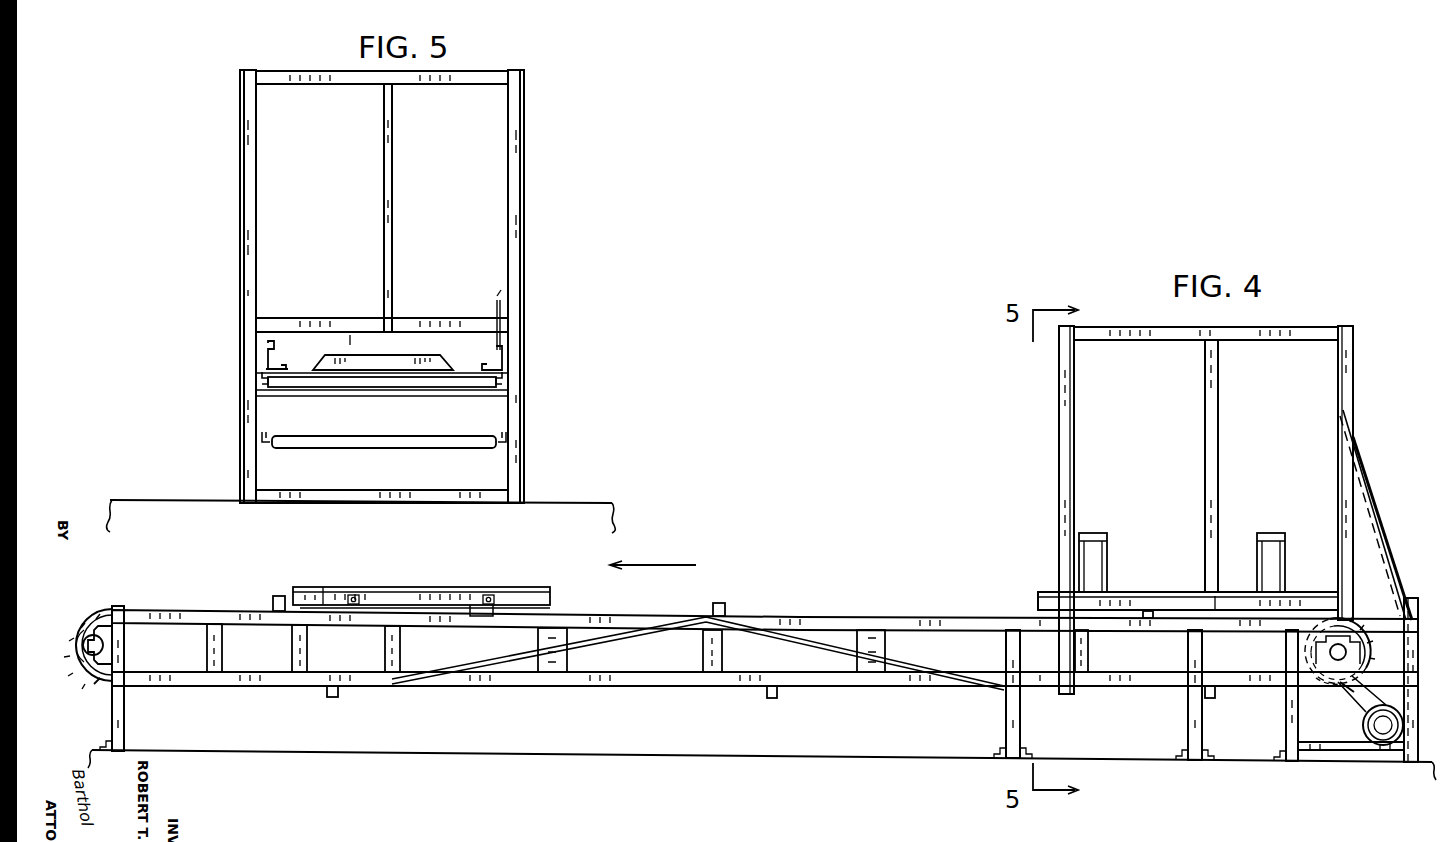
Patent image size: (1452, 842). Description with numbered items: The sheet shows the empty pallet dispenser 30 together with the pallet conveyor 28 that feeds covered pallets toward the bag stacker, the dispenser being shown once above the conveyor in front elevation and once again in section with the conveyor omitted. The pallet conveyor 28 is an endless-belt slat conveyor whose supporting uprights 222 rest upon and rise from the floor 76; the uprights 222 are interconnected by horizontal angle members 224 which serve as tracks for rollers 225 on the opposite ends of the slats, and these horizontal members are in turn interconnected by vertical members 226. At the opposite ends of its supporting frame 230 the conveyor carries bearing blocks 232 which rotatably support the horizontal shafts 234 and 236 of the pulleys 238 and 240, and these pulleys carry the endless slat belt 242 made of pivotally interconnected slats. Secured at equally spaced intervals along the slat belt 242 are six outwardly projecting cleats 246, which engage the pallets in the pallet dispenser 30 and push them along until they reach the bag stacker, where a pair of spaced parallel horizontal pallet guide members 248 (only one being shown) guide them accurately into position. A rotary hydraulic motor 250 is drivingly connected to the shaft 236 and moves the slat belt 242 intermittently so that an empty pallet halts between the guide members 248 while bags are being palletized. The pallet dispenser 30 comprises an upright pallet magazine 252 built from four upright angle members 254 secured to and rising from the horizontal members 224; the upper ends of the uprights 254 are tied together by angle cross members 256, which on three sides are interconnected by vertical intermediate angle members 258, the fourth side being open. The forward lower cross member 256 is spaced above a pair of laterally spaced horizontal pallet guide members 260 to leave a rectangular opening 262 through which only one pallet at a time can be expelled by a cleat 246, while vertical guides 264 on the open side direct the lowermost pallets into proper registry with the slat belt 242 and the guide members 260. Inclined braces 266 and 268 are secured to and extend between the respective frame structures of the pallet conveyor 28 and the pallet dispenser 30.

In FIG. 4, the pallet conveyor 28 is at (826, 616).
In FIG. 4, the pallet dispenser 30 is at (1366, 440).
In FIG. 5, the floor 76 is at (576, 502).
In FIG. 4, the floor 76 is at (487, 753).
In FIG. 4, the supporting uprights 222 is at (124, 700).
In FIG. 4, the horizontal angle members 224 is at (168, 622).
In FIG. 5, the rollers 225 is at (504, 378).
In FIG. 4, the vertical members 226 is at (222, 640).
In FIG. 4, the supporting frame 230 is at (586, 688).
In FIG. 4, the bearing blocks 232 is at (84, 622).
In FIG. 4, the shaft 234 is at (1352, 656).
In FIG. 4, the shaft 236 is at (84, 688).
In FIG. 4, the pulley 238 is at (1352, 626).
In FIG. 4, the pulley 240 is at (104, 612).
In FIG. 5, the endless slat belt 242 is at (356, 384).
In FIG. 4, the endless slat belt 242 is at (90, 690).
In FIG. 5, the cleats 246 is at (372, 366).
In FIG. 4, the cleats 246 is at (270, 596).
In FIG. 4, the pallet guide members 248 is at (472, 586).
In FIG. 4, the rotary hydraulic motor 250 is at (1368, 748).
In FIG. 4, the pallet magazine 252 is at (1356, 335).
In FIG. 4, the upright angle members 254 is at (1354, 378).
In FIG. 5, the angle cross members 256 is at (467, 80).
In FIG. 5, the vertical intermediate angle members 258 is at (384, 224).
In FIG. 4, the vertical intermediate angle members 258 is at (1211, 466).
In FIG. 5, the horizontal pallet guide members 260 is at (276, 354).
In FIG. 4, the horizontal pallet guide members 260 is at (1236, 594).
In FIG. 5, the rectangular opening 262 is at (497, 301).
In FIG. 4, the vertical guides 264 is at (1103, 538).
In FIG. 4, the inclined brace 266 is at (636, 642).
In FIG. 4, the inclined brace 268 is at (1376, 500).